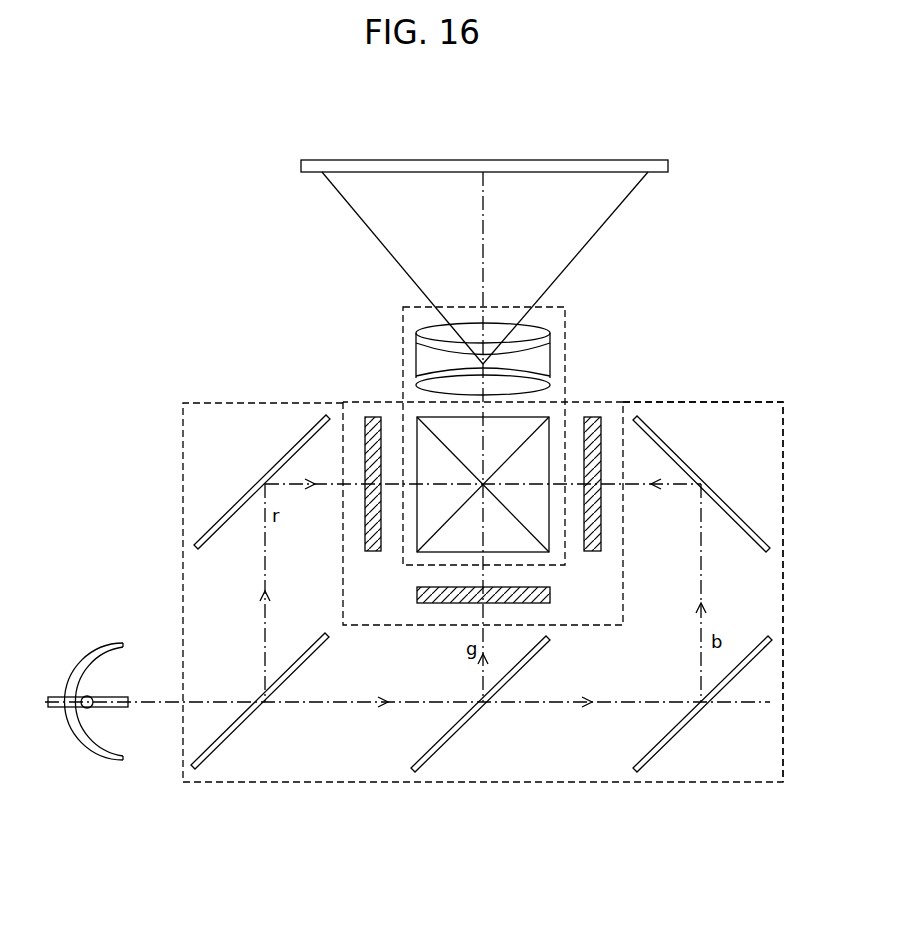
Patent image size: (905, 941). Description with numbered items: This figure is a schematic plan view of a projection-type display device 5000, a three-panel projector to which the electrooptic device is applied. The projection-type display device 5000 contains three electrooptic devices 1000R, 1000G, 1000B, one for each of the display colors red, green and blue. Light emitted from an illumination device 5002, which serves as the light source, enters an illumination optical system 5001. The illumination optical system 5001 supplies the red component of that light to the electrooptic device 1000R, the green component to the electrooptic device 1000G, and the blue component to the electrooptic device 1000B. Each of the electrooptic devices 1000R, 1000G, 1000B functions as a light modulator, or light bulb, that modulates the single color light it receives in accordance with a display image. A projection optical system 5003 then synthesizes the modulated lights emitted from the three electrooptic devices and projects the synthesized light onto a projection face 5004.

The projection-type display device 5000 is at (216, 352).
The illumination optical system 5001 is at (752, 401).
The illumination device 5002 is at (109, 643).
The projection optical system 5003 is at (565, 345).
The projection face 5004 is at (540, 160).
The electrooptic device 1000R is at (365, 529).
The electrooptic device 1000G is at (421, 604).
The electrooptic device 1000B is at (603, 536).